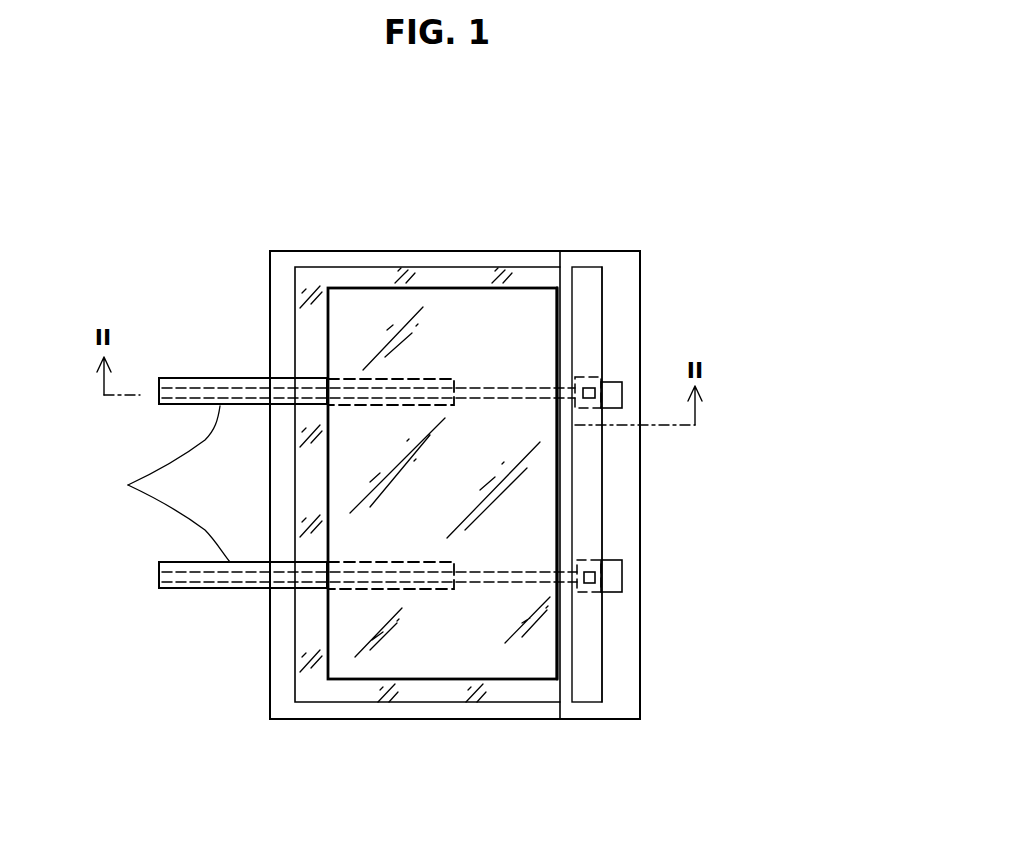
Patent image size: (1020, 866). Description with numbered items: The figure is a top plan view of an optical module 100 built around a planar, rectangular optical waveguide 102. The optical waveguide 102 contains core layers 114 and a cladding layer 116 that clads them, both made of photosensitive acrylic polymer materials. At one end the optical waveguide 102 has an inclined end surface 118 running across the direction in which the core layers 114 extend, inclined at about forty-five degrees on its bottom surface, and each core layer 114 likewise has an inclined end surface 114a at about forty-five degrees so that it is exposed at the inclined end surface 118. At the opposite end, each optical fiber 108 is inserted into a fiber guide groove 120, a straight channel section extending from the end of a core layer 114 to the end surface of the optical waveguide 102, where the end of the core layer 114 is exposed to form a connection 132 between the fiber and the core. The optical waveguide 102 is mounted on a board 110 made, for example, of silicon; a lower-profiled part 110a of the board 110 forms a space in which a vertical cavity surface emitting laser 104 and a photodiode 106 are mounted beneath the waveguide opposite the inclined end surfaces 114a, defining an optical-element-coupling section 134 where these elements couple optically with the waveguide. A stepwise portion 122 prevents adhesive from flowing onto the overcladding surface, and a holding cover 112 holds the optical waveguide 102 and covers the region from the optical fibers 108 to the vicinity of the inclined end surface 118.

The optical module 100 is at (276, 170).
The optical waveguide 102 is at (303, 318).
The vertical cavity surface emitting LASER (VCSEL) 104 is at (617, 383).
The photodiode (PD) 106 is at (613, 575).
The optical fiber 108 is at (199, 483).
The board 110 is at (278, 691).
The part of the board 110a is at (632, 285).
The holding cover 112 is at (493, 623).
The core layer 114 is at (483, 390).
The inclined end surface of the core layer 114a is at (595, 388).
The cladding layer 116 is at (530, 373).
The inclined end surface 118 is at (592, 280).
The fiber guide groove 120 is at (313, 378).
The stepwise portion 122 is at (568, 642).
The connection 132 is at (453, 597).
The optical-element-coupling section 134 is at (605, 413).